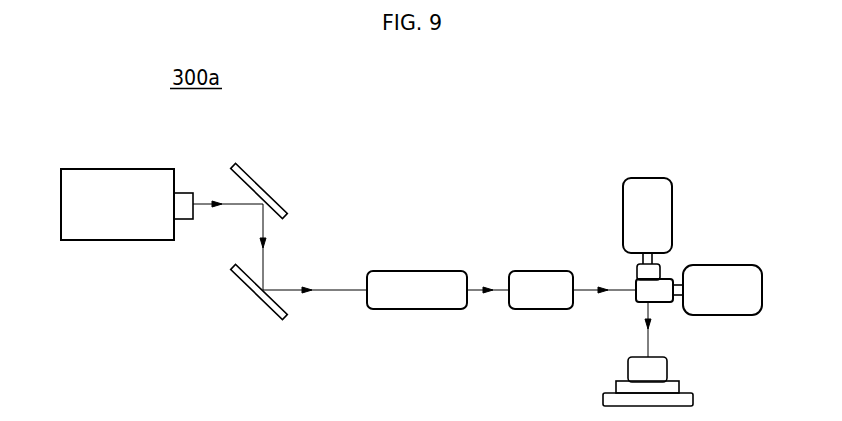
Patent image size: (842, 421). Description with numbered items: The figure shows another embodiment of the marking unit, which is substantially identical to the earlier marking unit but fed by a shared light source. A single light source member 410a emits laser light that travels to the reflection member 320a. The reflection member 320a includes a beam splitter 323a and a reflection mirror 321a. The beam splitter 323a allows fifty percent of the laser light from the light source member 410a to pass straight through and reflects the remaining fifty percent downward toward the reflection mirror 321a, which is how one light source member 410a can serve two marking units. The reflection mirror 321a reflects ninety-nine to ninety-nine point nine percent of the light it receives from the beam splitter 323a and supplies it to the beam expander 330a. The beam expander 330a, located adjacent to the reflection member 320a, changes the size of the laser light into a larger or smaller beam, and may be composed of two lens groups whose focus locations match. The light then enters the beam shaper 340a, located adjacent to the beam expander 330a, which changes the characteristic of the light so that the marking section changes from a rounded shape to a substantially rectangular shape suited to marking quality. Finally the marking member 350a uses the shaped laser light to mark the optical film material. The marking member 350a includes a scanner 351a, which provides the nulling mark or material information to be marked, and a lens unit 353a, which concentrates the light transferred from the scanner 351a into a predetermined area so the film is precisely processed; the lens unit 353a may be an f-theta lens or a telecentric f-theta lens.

The light source member 410a is at (152, 168).
The reflection member 320a is at (206, 289).
The beam splitter 323a is at (275, 168).
The reflection mirror 321a is at (263, 312).
The beam expander 330a is at (433, 270).
The beam shaper 340a is at (545, 270).
The marking member 350a is at (682, 270).
The scanner 351a is at (652, 178).
The lens unit 353a is at (695, 398).